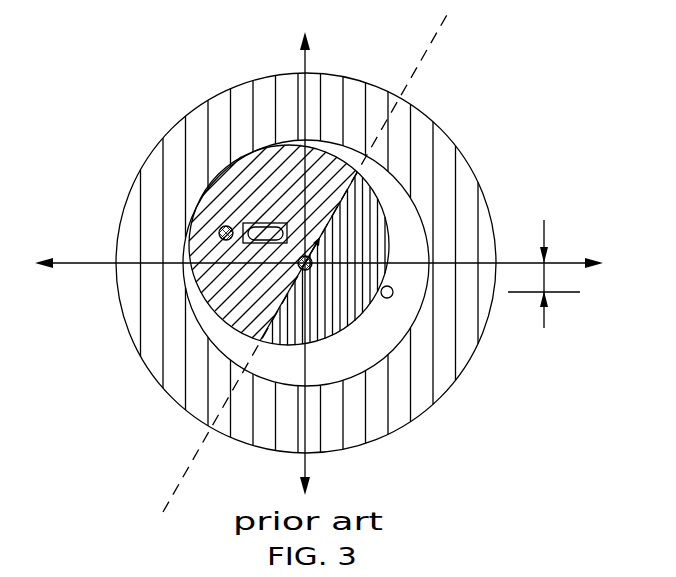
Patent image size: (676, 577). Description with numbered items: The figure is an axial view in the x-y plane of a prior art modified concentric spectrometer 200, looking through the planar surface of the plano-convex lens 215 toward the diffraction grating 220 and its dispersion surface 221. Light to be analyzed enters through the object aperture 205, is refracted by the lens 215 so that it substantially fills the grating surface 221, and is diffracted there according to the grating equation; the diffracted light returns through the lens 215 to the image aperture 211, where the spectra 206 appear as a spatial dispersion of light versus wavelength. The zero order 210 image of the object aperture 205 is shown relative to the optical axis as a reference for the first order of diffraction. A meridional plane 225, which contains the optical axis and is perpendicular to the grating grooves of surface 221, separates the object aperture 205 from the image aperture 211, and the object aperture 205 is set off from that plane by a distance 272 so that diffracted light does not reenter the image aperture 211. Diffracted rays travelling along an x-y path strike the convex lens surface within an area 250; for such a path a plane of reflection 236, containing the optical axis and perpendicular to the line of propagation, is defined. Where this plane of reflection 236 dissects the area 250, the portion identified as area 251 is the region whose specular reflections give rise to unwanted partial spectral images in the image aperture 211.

The modified concentric spectrometer 200 is at (410, 251).
The object aperture 205 is at (393, 295).
The spectra 206 is at (276, 232).
The zero order 210 is at (216, 192).
The image aperture 211 is at (226, 226).
The plano-convex lens 215 is at (206, 348).
The diffraction grating 220 is at (466, 162).
The dispersion surface 221 is at (412, 129).
The meridional plane 225 is at (77, 262).
The plane of reflection 236 is at (427, 50).
The area 250 is at (202, 199).
The area 251 is at (347, 285).
The distance 272 is at (544, 274).